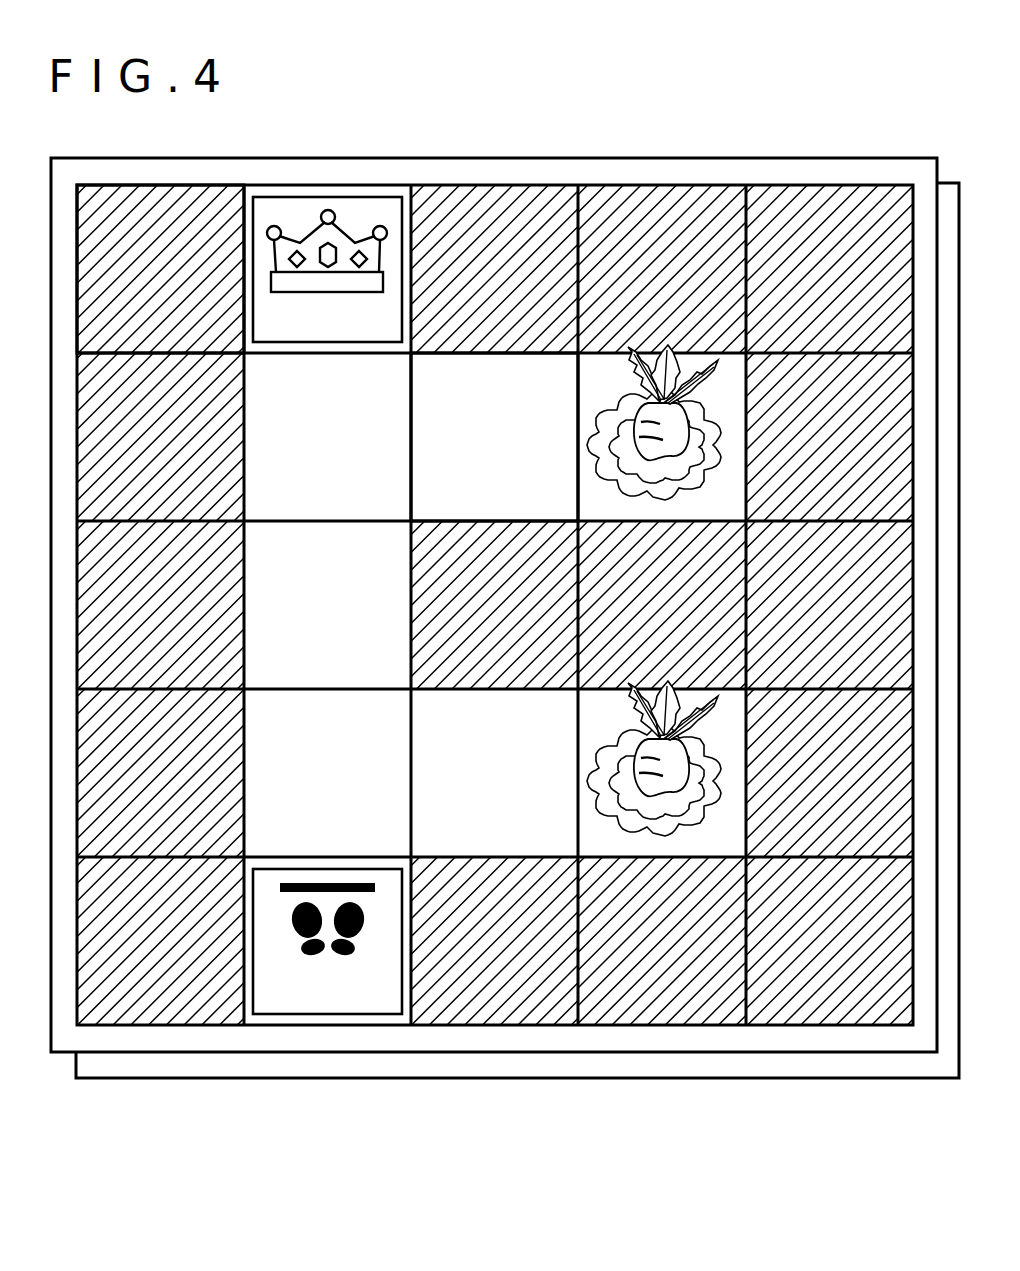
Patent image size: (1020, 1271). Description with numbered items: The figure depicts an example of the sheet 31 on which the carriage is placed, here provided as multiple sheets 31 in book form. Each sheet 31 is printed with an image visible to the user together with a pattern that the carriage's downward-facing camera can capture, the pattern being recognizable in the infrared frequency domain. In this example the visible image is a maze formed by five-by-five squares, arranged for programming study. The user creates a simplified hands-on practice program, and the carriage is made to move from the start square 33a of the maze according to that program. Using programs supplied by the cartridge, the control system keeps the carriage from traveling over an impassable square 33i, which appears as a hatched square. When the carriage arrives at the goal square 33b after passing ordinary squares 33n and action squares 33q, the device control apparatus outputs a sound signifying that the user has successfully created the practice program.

The sheet 31 is at (67, 1076).
The start square 33a is at (352, 1012).
The goal square 33b is at (387, 200).
The impassable square 33i is at (198, 200).
The ordinary square 33n is at (395, 396).
The action square 33q is at (608, 373).